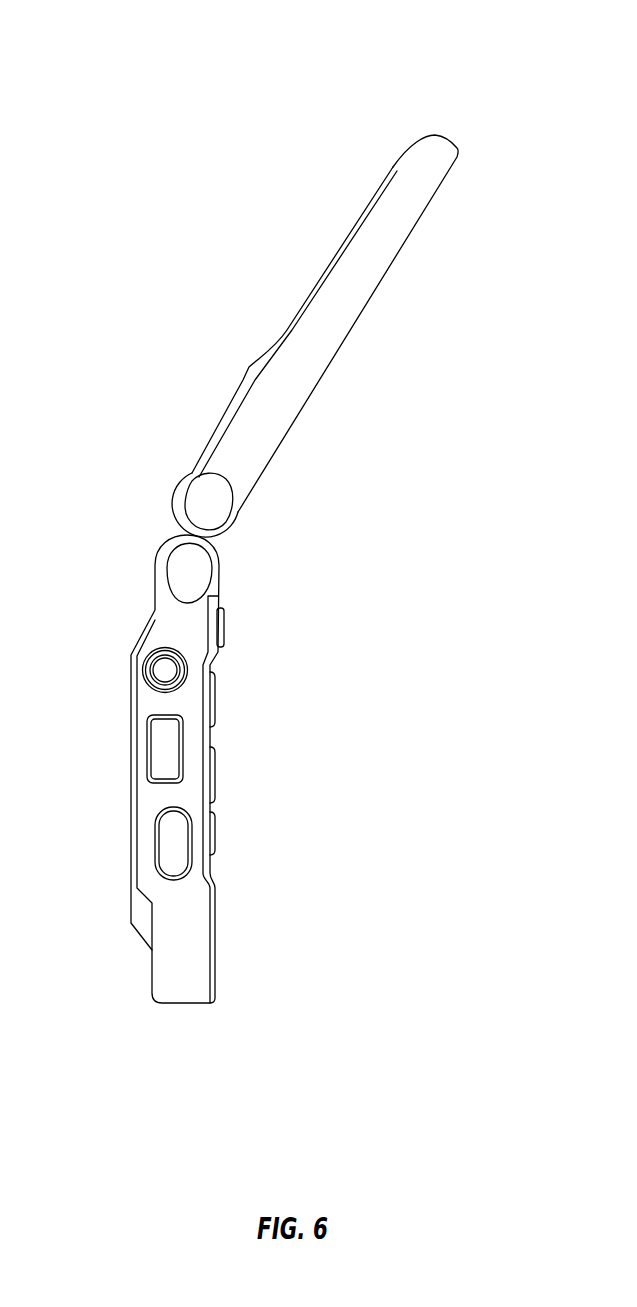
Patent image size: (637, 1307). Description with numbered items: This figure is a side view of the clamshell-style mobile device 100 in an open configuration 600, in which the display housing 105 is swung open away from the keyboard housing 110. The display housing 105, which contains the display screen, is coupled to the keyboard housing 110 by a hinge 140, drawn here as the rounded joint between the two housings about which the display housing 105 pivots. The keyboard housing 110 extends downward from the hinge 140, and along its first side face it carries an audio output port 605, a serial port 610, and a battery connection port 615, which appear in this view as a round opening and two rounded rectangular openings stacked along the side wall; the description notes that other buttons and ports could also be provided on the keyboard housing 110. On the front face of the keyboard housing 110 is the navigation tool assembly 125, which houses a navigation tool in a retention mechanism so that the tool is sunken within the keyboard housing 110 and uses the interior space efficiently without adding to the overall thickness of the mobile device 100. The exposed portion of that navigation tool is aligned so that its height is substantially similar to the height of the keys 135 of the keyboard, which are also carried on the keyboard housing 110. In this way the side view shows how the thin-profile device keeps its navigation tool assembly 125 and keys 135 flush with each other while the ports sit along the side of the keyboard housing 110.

The open configuration 600 is at (195, 35).
The mobile device 100 is at (361, 302).
The display housing 105 is at (432, 157).
The keyboard housing 110 is at (186, 787).
The navigation tool assembly 125 is at (222, 622).
The keys 135 is at (217, 763).
The hinge 140 is at (202, 512).
The audio output port 605 is at (141, 664).
The serial port 610 is at (147, 752).
The battery connection port 615 is at (155, 843).